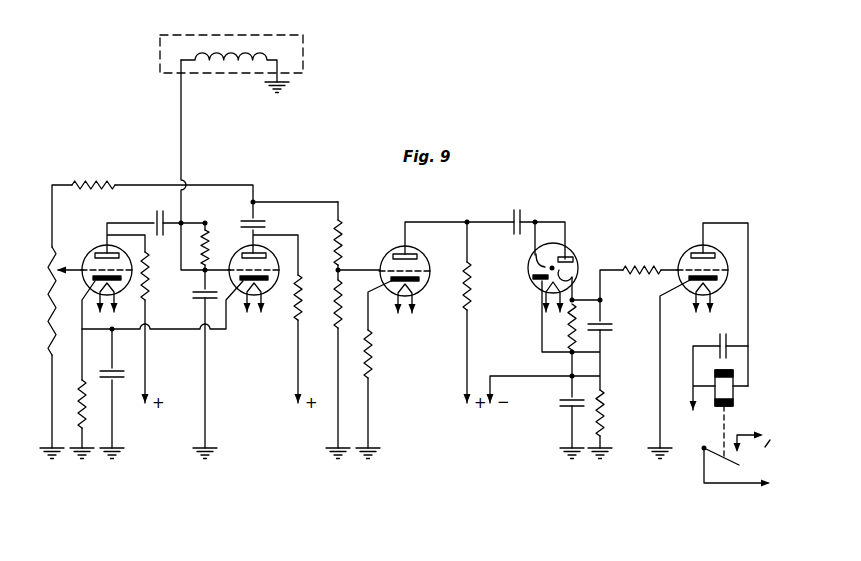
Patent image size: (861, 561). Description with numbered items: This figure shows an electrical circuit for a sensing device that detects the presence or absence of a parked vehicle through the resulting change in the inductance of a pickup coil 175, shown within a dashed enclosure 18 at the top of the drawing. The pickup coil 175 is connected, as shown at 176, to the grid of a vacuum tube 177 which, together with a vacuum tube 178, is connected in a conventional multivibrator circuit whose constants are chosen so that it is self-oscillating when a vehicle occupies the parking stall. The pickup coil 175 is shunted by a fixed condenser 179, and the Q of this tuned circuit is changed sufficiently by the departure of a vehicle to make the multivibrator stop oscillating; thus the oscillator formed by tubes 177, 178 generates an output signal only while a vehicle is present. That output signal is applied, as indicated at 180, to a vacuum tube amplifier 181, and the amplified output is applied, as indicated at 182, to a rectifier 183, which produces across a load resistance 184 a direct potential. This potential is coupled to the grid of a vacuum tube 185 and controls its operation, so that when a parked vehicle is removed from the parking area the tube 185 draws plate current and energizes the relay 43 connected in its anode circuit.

The pickup unit 18 is at (304, 52).
The pickup coil 175 is at (229, 52).
The connection to grid 176 is at (183, 136).
The vacuum tube 177 is at (268, 281).
The vacuum tube 178 is at (93, 246).
The fixed condenser 179 is at (198, 298).
The output signal connection 180 is at (343, 222).
The vacuum tube amplifier 181 is at (418, 259).
The amplified output connection 182 is at (527, 221).
The rectifier 183 is at (570, 251).
The load resistance 184 is at (580, 331).
The vacuum tube 185 is at (688, 251).
The relay 43 is at (722, 388).